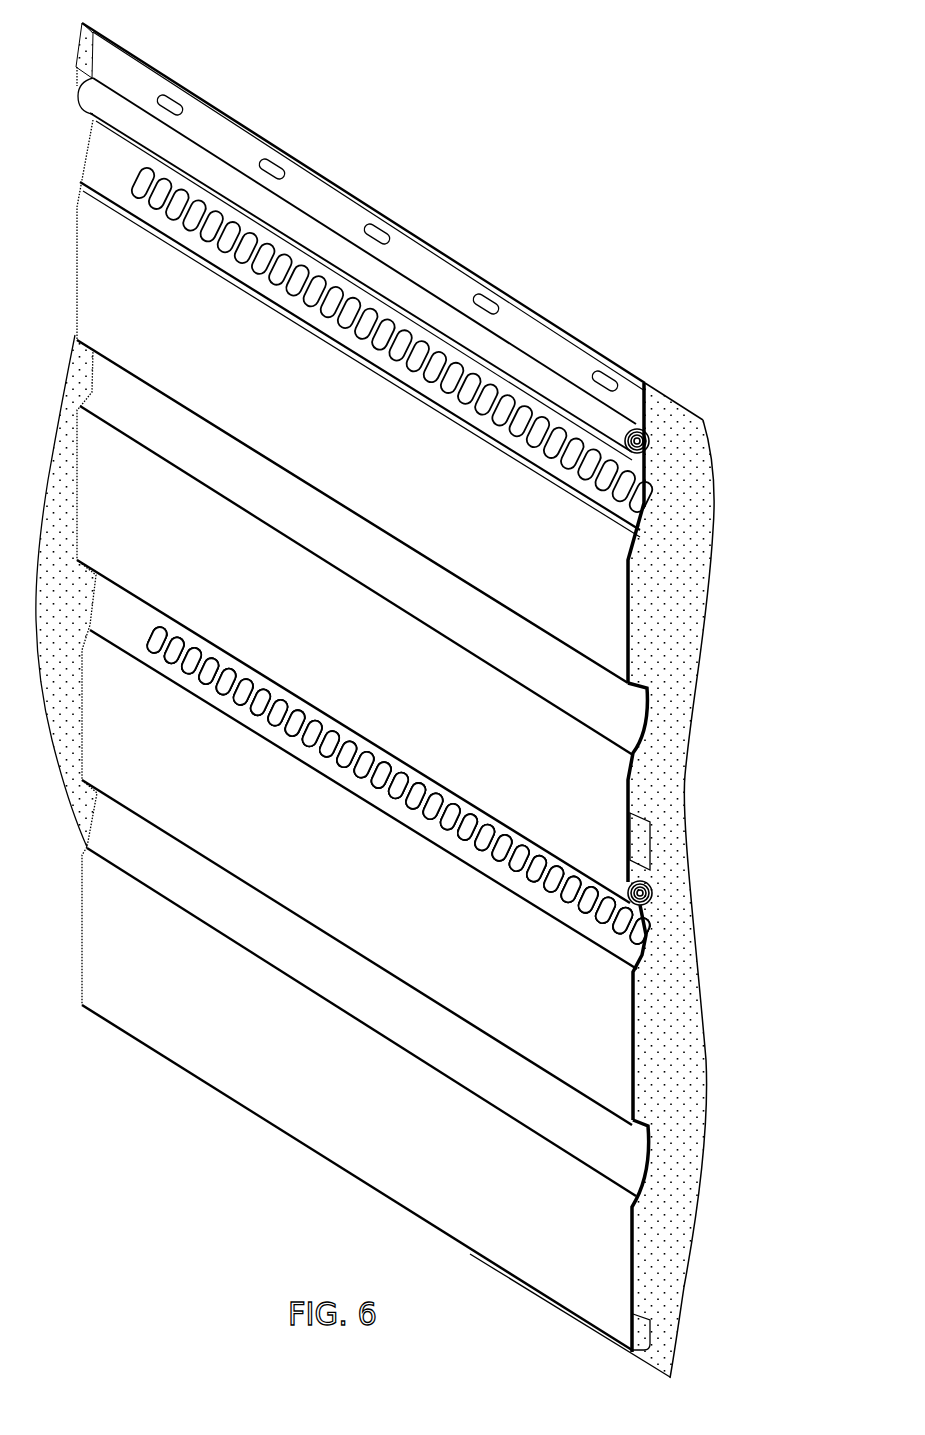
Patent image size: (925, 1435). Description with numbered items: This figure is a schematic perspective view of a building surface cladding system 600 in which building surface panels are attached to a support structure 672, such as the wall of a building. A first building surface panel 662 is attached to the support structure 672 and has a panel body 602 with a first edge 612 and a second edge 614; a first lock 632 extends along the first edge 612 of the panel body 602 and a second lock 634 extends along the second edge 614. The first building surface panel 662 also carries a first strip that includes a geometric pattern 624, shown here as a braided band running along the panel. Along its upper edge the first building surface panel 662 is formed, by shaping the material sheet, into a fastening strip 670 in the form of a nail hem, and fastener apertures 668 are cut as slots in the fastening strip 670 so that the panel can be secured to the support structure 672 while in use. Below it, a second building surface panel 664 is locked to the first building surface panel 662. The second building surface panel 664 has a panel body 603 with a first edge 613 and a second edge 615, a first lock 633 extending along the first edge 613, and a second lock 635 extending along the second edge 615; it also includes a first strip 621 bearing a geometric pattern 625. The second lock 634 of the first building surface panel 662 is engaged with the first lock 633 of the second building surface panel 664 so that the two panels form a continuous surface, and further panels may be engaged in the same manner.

The building surface cladding system 600 is at (431, 700).
The panel body 602 is at (412, 621).
The panel body 603 is at (449, 1066).
The first edge 612 is at (645, 461).
The first edge 613 is at (654, 861).
The second edge 614 is at (133, 604).
The second edge 615 is at (300, 1148).
The first strip 621 is at (156, 668).
The geometric pattern 624 is at (136, 194).
The geometric pattern 625 is at (652, 941).
The first lock 632 is at (648, 440).
The first lock 633 is at (655, 881).
The second lock 634 is at (652, 905).
The second lock 635 is at (646, 1318).
The first building surface panel 662 is at (175, 500).
The second building surface panel 664 is at (180, 773).
The fastener apertures 668 is at (278, 164).
The fastening strip 670 is at (361, 241).
The support structure 672 is at (718, 499).